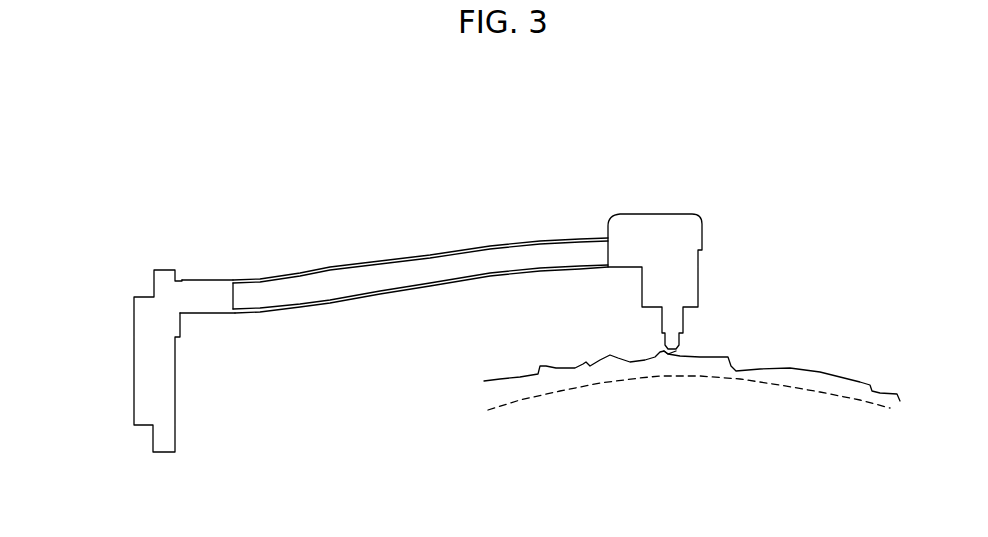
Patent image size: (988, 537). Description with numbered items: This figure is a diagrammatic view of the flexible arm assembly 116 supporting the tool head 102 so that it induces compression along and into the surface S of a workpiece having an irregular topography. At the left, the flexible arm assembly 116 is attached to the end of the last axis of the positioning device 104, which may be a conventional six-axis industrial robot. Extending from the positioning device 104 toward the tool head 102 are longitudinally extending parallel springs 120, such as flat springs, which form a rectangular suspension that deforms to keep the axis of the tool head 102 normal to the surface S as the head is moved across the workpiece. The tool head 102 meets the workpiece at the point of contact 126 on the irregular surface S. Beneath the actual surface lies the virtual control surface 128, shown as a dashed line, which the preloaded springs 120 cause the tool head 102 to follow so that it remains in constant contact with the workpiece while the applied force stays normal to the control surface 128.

The tool head 102 is at (681, 213).
The positioning device 104 is at (132, 378).
The flexible arm assembly 116 is at (334, 310).
The parallel springs 120 is at (476, 238).
The point of contact 126 is at (672, 350).
The virtual control surface 128 is at (655, 377).
The surface S is at (824, 372).